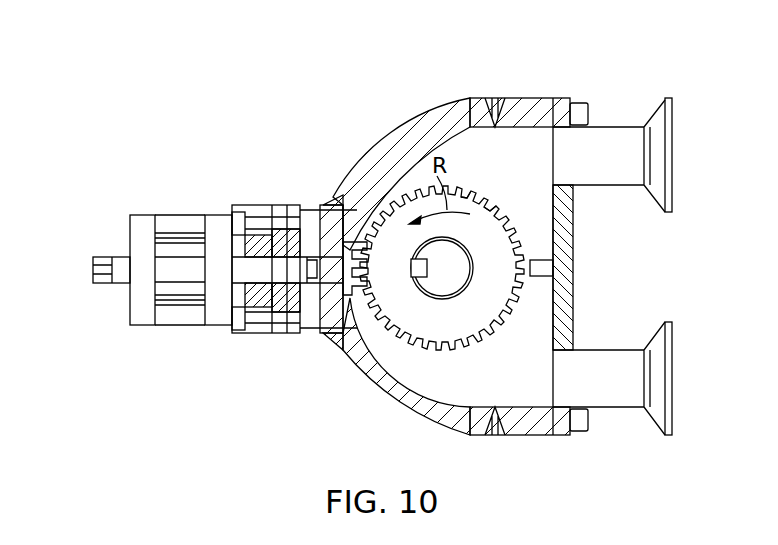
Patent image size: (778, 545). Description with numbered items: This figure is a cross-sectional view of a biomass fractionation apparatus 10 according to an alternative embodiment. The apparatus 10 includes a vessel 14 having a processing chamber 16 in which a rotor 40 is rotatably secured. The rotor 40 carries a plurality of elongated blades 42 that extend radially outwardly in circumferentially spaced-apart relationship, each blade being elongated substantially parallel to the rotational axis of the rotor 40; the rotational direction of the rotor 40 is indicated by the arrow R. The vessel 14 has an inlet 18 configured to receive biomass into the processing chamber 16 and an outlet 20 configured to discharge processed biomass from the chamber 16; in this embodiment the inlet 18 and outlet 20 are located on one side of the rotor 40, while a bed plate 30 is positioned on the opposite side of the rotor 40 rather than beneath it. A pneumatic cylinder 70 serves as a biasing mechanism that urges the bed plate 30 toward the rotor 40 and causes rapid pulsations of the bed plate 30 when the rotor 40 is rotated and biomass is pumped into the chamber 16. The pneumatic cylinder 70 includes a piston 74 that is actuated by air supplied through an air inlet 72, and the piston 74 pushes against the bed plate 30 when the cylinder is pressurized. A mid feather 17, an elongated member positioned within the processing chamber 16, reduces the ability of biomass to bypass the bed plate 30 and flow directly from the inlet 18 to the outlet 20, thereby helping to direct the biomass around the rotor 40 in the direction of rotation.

The biomass fractionation apparatus 10 is at (618, 67).
The vessel 14 is at (446, 112).
The processing chamber 16 is at (462, 406).
The mid feather 17 is at (560, 262).
The inlet 18 is at (670, 160).
The outlet 20 is at (670, 378).
The bed plate 30 is at (328, 330).
The rotor 40 is at (485, 318).
The elongated blades 42 is at (466, 190).
The pneumatic cylinder 70 is at (176, 330).
The air inlet 72 is at (93, 276).
The piston 74 is at (330, 262).